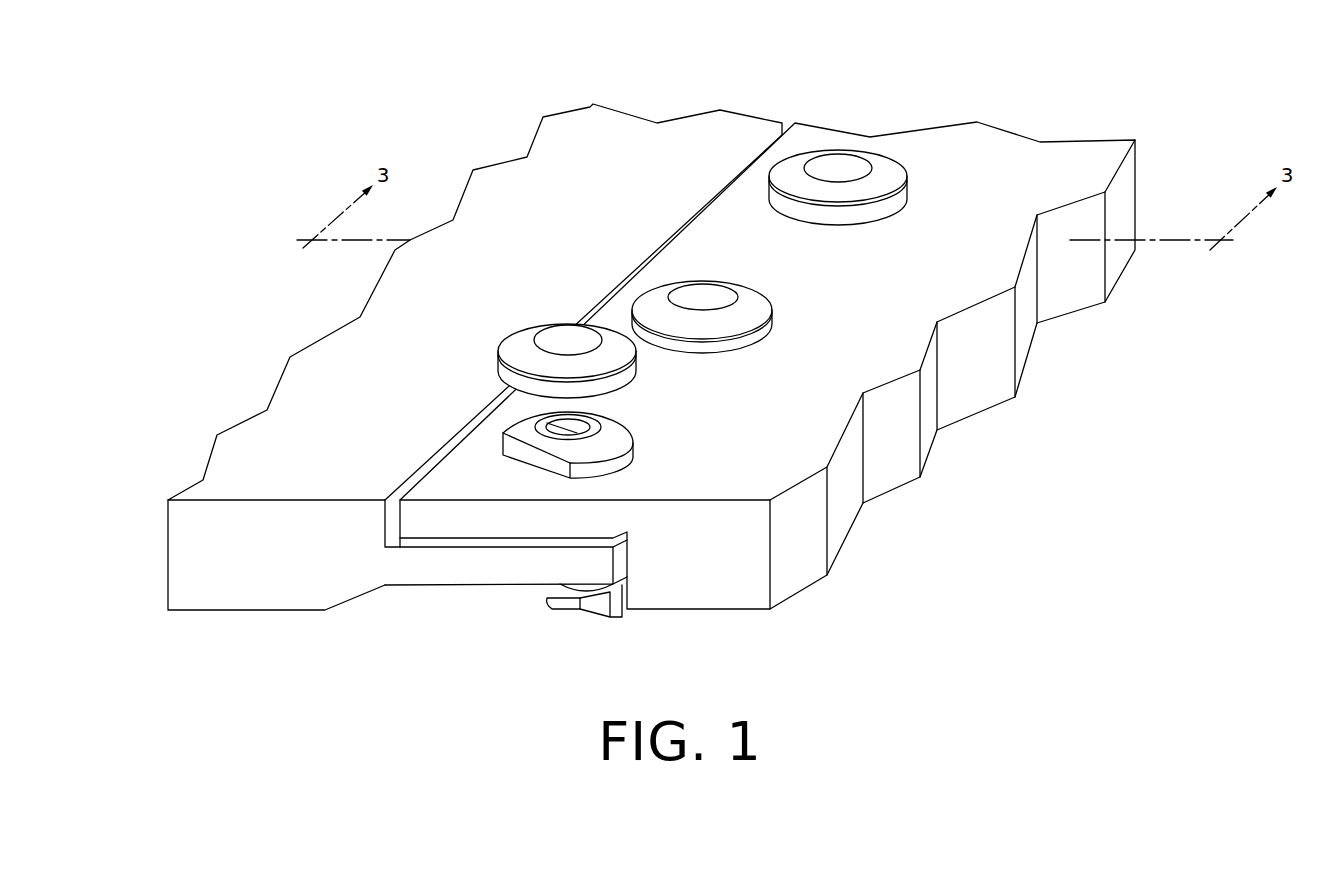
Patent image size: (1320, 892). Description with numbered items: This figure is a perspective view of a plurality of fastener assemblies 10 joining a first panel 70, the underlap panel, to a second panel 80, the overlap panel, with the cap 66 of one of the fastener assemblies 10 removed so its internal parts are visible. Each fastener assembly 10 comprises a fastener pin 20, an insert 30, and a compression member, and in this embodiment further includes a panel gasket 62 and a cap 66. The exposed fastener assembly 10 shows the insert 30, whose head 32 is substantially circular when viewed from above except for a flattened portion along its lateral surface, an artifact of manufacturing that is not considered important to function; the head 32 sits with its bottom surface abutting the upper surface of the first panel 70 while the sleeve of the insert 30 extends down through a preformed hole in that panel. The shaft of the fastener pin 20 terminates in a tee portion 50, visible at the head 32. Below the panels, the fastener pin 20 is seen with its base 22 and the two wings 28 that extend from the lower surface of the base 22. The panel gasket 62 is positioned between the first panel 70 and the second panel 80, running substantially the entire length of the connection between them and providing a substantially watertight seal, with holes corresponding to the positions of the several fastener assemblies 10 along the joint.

The fastener assembly 10 is at (611, 237).
The fastener pin 20 is at (567, 610).
The base 22 is at (523, 587).
The wings 28 is at (613, 618).
The insert 30 is at (633, 422).
The head 32 is at (633, 453).
The tee portion 50 is at (620, 445).
The panel gasket 62 is at (435, 546).
The cap 66 is at (530, 333).
The first panel 70 is at (747, 611).
The second panel 80 is at (293, 611).